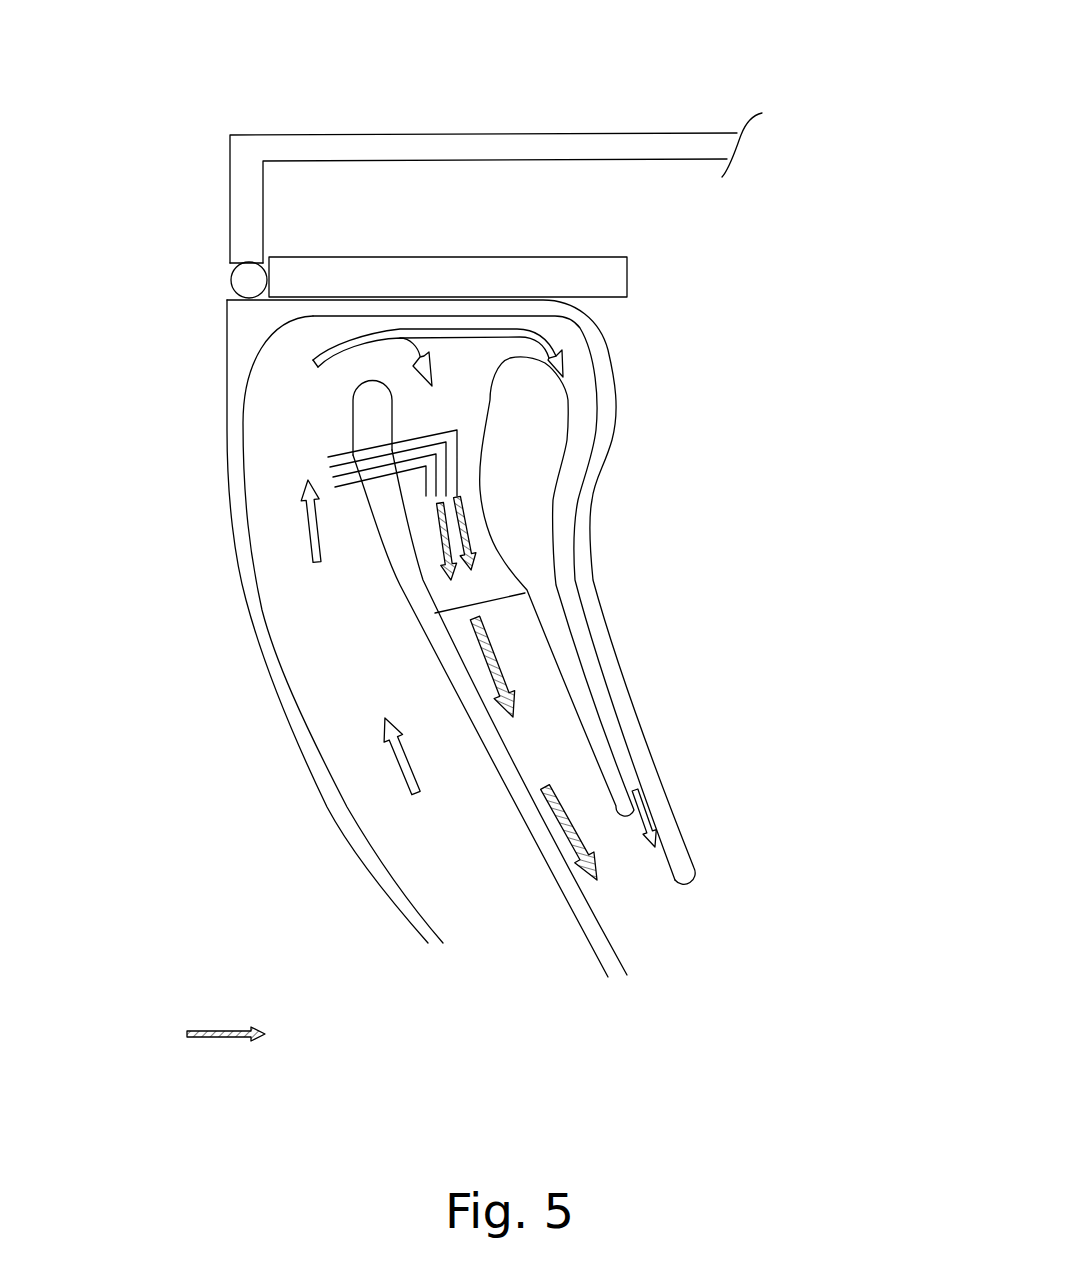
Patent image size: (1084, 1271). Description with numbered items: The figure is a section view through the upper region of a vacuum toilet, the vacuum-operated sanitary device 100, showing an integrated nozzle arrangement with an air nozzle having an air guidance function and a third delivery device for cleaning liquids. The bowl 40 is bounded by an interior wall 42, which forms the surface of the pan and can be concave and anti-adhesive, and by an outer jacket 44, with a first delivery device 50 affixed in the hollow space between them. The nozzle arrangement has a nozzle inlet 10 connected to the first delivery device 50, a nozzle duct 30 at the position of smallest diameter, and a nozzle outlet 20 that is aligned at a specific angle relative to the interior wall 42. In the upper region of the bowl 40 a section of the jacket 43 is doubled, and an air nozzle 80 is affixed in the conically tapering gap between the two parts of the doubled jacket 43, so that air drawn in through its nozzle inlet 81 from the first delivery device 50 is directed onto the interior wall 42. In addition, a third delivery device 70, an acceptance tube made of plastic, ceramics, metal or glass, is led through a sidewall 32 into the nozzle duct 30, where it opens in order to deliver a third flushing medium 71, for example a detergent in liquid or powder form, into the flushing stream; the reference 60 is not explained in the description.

The vacuum-operated sanitary device 100 is at (775, 106).
The nozzle inlet 10 is at (455, 398).
The nozzle outlet 20 is at (492, 568).
The nozzle duct 30 is at (472, 485).
The sidewall 32 is at (413, 554).
The bowl 40 is at (326, 808).
The interior wall 42 is at (610, 935).
The jacket 43 is at (650, 742).
The outer jacket 44 is at (292, 703).
The first delivery device 50 is at (273, 387).
The inlet 60 is at (325, 468).
The third delivery device 70 is at (455, 437).
The third flushing medium 71 is at (249, 1038).
The air nozzle 80 is at (589, 682).
The nozzle inlet 81 is at (572, 372).